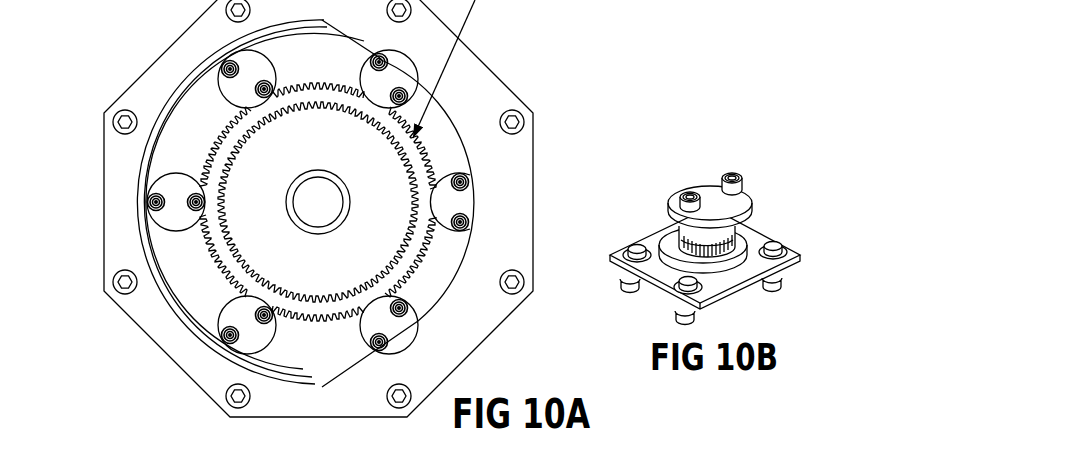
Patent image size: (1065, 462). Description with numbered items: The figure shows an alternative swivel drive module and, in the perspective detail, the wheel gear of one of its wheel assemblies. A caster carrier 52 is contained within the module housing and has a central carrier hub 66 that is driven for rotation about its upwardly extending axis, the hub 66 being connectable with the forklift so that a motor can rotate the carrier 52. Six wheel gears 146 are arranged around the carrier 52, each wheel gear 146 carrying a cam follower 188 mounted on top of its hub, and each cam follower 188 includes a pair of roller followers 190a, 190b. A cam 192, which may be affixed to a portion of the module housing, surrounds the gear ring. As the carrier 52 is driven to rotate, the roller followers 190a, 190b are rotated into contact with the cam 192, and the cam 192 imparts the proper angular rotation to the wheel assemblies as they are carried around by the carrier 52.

In FIG. 10A, the caster carrier 52 is at (193, 127).
In FIG. 10A, the carrier hub 66 is at (316, 203).
In FIG. 10A, the wheel gear 146 is at (232, 311).
In FIG. 10B, the wheel gear 146 is at (676, 208).
In FIG. 10A, the cam 192 is at (458, 123).
In FIG. 10B, the cam follower 188 is at (693, 182).
In FIG. 10B, the roller follower 190a is at (730, 177).
In FIG. 10B, the roller follower 190b is at (678, 193).